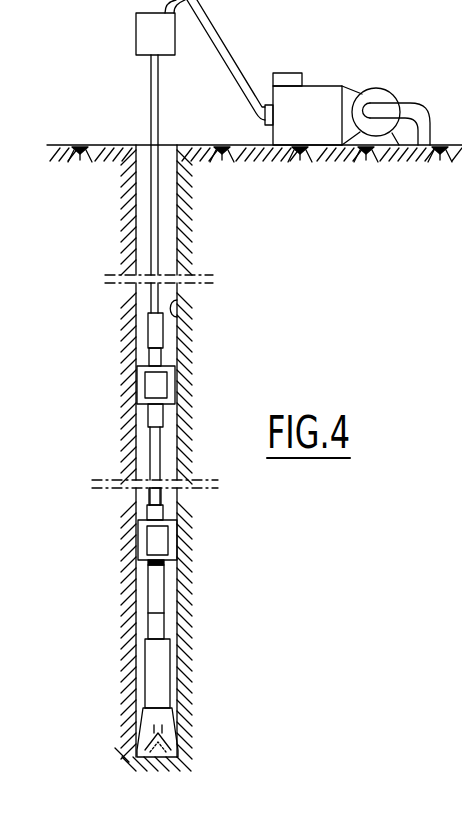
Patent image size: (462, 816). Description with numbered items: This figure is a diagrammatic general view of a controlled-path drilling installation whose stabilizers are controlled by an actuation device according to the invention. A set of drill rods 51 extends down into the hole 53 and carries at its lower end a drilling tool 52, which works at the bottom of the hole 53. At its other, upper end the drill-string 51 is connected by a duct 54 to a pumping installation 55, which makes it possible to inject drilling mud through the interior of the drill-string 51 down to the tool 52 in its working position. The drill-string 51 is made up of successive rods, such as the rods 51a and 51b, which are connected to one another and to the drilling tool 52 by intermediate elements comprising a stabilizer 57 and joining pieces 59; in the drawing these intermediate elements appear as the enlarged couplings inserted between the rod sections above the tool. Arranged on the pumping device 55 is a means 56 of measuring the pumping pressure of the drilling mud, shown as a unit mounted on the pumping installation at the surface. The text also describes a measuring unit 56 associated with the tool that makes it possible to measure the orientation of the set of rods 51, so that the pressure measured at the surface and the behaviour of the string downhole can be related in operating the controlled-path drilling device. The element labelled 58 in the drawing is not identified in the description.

The drill rods 51 is at (150, 88).
The rod 51a is at (156, 331).
The rod 51b is at (155, 450).
The drilling tool 52 is at (172, 725).
The hole 53 is at (182, 317).
The duct 54 is at (233, 58).
The pumping installation 55 is at (335, 97).
The means of measuring the pumping pressure 56 is at (298, 79).
The stabilizer 57 is at (176, 548).
The drill hammer 58 is at (158, 678).
The joining pieces 59 is at (163, 418).